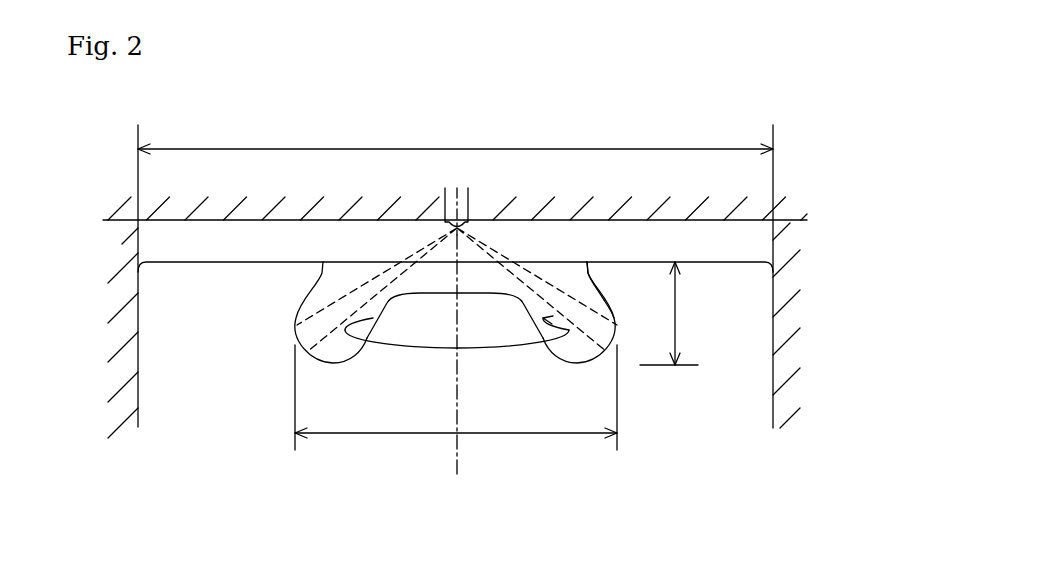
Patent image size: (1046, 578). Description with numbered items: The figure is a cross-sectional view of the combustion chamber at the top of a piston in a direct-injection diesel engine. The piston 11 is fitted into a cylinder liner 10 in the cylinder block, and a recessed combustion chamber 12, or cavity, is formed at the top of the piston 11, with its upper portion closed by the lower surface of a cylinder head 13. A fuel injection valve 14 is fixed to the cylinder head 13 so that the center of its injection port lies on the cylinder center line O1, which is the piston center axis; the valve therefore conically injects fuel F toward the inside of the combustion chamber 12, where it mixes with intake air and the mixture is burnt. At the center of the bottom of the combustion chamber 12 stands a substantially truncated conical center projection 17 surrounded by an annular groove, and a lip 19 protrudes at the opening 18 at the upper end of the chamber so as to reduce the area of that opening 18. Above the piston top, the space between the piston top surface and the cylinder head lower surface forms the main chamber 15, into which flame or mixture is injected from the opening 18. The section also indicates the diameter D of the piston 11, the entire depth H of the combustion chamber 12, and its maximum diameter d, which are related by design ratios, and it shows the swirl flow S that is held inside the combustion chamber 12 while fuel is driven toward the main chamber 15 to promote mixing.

The cylinder liner 10 is at (128, 312).
The piston 11 is at (748, 315).
The combustion chamber 12 is at (338, 268).
The cylinder head 13 is at (178, 213).
The fuel injection valve 14 is at (468, 190).
The main chamber 15 is at (728, 244).
The center projection 17 is at (505, 321).
The opening 18 is at (590, 262).
The lip 19 is at (603, 274).
The fuel F is at (340, 297).
The swirl flow S is at (400, 348).
The diameter of the piston D is at (455, 138).
The entire depth of the combustion chamber H is at (670, 313).
The maximum diameter of the combustion chamber d is at (456, 397).
The cylinder center line O1 is at (456, 455).